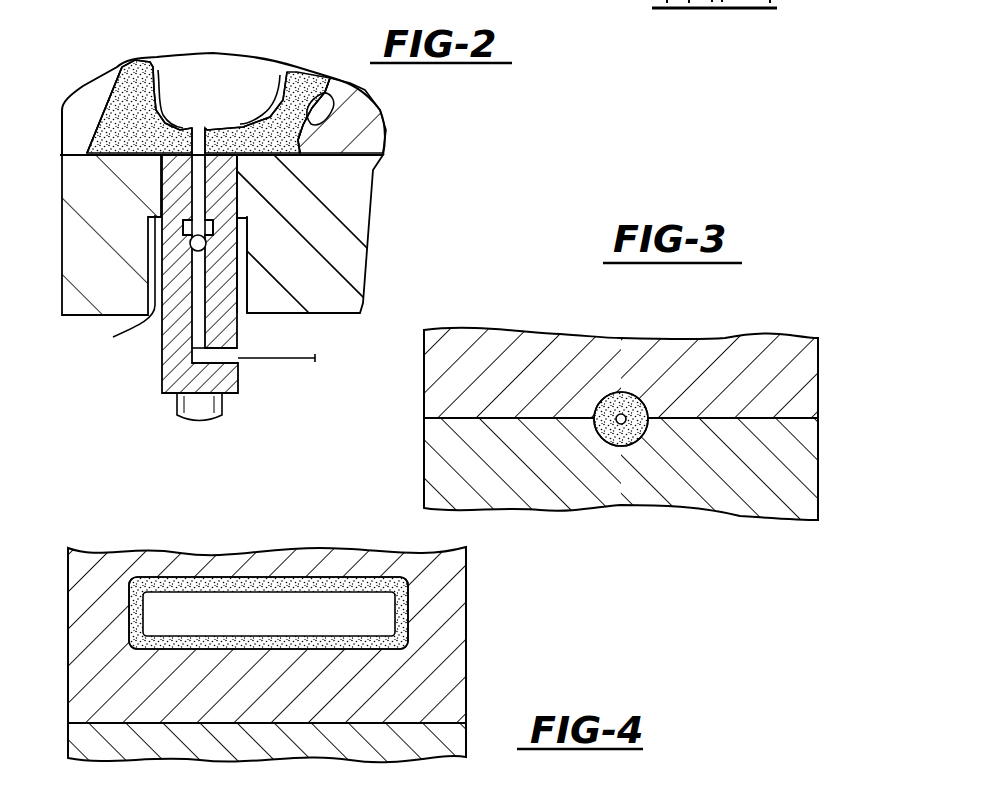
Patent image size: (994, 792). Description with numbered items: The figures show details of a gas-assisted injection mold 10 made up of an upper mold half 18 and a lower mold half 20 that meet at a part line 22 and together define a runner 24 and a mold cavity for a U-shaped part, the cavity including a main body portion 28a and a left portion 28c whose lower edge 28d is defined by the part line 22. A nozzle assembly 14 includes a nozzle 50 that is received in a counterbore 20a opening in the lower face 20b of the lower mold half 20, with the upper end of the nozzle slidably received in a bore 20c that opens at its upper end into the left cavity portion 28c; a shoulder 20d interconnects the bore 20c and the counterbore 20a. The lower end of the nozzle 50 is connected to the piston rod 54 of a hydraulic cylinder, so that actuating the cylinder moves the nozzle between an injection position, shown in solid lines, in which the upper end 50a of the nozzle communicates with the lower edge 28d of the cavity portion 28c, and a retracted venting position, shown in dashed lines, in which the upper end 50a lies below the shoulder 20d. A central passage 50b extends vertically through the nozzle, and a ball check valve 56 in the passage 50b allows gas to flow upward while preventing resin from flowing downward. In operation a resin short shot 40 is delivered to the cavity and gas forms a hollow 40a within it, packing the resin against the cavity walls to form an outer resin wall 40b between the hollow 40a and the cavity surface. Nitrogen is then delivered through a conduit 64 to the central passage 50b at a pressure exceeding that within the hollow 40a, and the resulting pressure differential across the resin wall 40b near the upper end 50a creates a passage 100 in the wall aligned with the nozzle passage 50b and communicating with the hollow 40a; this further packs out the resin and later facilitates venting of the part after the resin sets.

In FIG. 4, the mold 10 is at (490, 597).
In FIG. 2, the nozzle assembly 14 is at (157, 355).
In FIG. 3, the upper mold half 18 is at (772, 342).
In FIG. 4, the upper mold half 18 is at (467, 620).
In FIG. 3, the lower mold half 20 is at (772, 483).
In FIG. 4, the lower mold half 20 is at (467, 732).
In FIG. 2, the counterbore 20a is at (112, 287).
In FIG. 2, the lower face 20b is at (357, 307).
In FIG. 2, the bore 20c is at (236, 238).
In FIG. 2, the shoulder 20d is at (149, 250).
In FIG. 2, the part line 22 is at (387, 143).
In FIG. 3, the runner 24 is at (610, 393).
In FIG. 4, the main body portion 28a is at (278, 590).
In FIG. 2, the left portion 28c is at (387, 113).
In FIG. 2, the lower edge 28d is at (126, 152).
In FIG. 2, the resin short shot 40 is at (313, 77).
In FIG. 3, the resin short shot 40 is at (673, 397).
In FIG. 4, the resin short shot 40 is at (193, 583).
In FIG. 3, the hollow 40a is at (645, 428).
In FIG. 4, the hollow 40a is at (295, 583).
In FIG. 2, the outer resin wall 40b is at (150, 30).
In FIG. 2, the nozzle 50 is at (163, 383).
In FIG. 2, the upper end of nozzle 50a is at (218, 135).
In FIG. 2, the central passage 50b is at (212, 205).
In FIG. 2, the piston rod 54 is at (225, 407).
In FIG. 2, the ball check valve 56 is at (206, 243).
In FIG. 2, the conduit 64 is at (255, 362).
In FIG. 2, the passage 100 is at (197, 128).